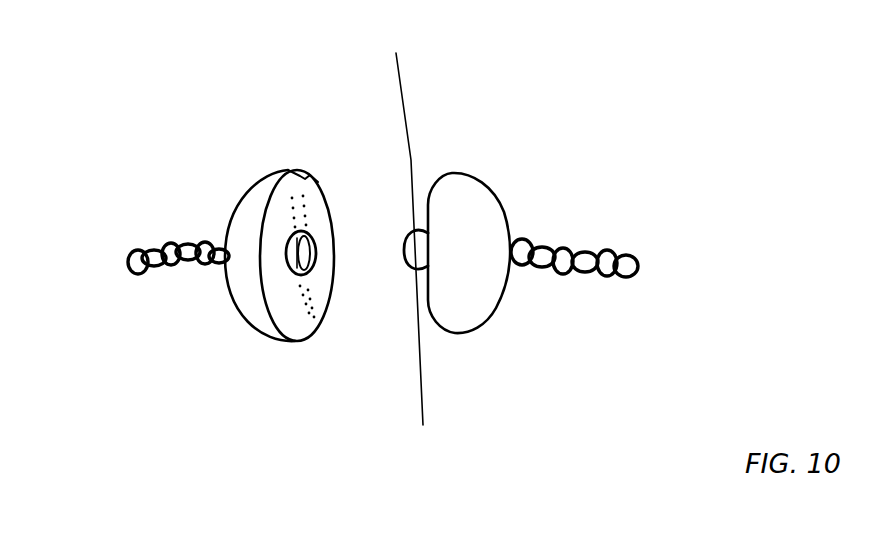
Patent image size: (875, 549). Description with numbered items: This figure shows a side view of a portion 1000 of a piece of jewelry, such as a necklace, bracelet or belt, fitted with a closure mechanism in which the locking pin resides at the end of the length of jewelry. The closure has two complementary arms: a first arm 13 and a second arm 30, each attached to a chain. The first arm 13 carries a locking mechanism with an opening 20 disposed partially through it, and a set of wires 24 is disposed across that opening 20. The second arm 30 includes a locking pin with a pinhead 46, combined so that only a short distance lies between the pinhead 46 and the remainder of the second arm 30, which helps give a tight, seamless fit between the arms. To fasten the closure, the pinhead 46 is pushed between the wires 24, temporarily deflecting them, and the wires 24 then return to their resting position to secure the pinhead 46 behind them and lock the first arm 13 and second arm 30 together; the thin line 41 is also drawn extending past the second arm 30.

The portion of jewelry 1000 is at (421, 174).
The first arm 13 is at (231, 284).
The opening 20 is at (350, 333).
The wires 24 is at (233, 210).
The second arm 30 is at (533, 285).
The cord 41 is at (396, 53).
The pinhead 46 is at (423, 425).